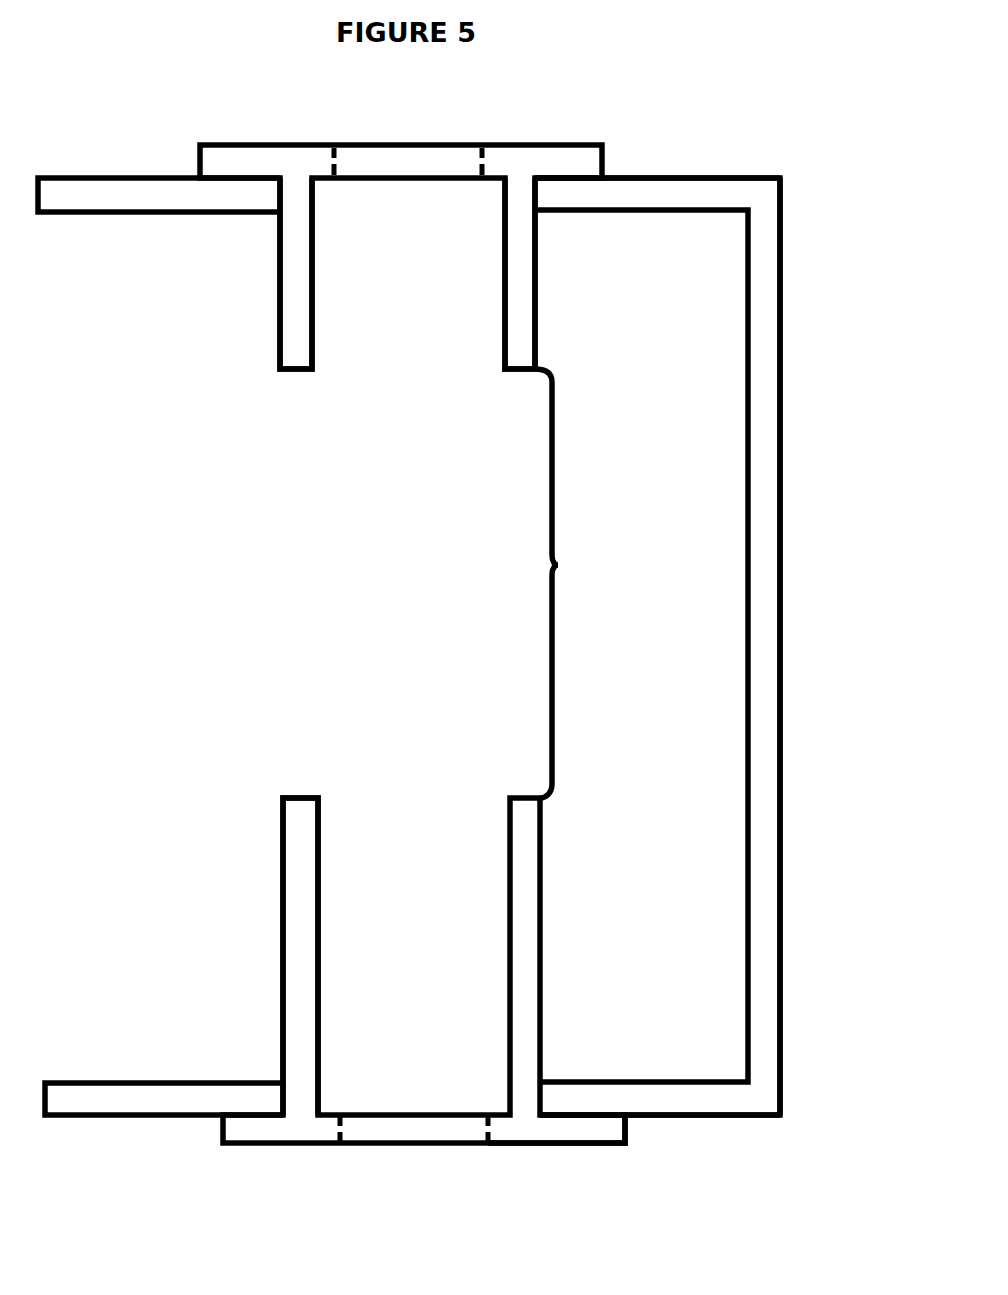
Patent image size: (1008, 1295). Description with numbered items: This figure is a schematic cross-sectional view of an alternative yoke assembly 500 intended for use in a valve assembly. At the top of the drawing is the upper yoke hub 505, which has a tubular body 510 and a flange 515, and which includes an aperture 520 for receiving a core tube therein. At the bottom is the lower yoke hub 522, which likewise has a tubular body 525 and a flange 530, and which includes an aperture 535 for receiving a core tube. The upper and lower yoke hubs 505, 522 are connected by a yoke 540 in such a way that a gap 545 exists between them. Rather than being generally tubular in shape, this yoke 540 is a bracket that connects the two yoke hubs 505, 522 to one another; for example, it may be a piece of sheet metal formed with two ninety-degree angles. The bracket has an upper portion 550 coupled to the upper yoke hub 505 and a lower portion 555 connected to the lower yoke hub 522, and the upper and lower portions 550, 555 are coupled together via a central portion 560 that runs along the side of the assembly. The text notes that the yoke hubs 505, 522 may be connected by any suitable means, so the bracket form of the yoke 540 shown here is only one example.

The yoke assembly 500 is at (598, 65).
The upper yoke hub 505 is at (247, 141).
The tubular body 510 is at (278, 290).
The flange 515 is at (495, 145).
The aperture 520 is at (333, 145).
The lower yoke hub 522 is at (269, 1150).
The tubular body 525 is at (282, 846).
The flange 530 is at (590, 1146).
The aperture 535 is at (345, 1114).
The yoke 540 is at (787, 812).
The gap 545 is at (572, 583).
The upper portion 550 is at (656, 177).
The lower portion 555 is at (696, 1117).
The central portion 560 is at (778, 975).